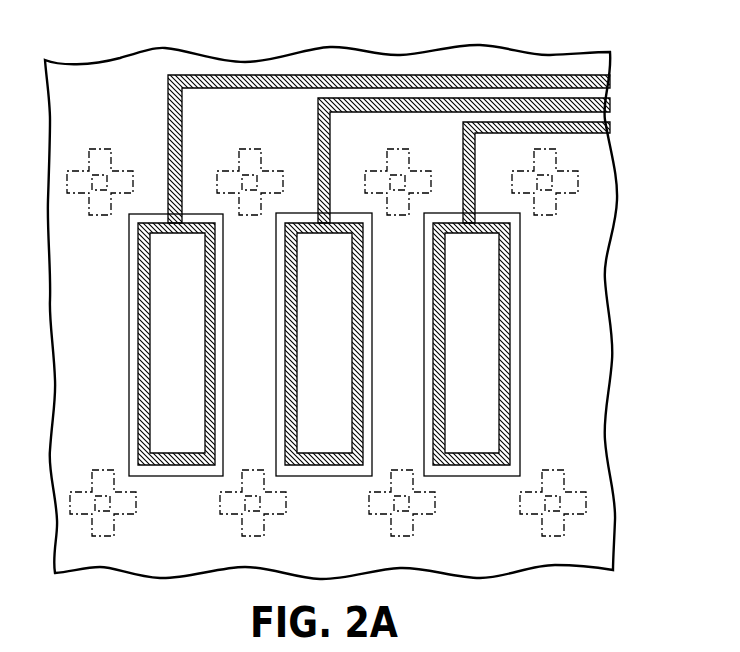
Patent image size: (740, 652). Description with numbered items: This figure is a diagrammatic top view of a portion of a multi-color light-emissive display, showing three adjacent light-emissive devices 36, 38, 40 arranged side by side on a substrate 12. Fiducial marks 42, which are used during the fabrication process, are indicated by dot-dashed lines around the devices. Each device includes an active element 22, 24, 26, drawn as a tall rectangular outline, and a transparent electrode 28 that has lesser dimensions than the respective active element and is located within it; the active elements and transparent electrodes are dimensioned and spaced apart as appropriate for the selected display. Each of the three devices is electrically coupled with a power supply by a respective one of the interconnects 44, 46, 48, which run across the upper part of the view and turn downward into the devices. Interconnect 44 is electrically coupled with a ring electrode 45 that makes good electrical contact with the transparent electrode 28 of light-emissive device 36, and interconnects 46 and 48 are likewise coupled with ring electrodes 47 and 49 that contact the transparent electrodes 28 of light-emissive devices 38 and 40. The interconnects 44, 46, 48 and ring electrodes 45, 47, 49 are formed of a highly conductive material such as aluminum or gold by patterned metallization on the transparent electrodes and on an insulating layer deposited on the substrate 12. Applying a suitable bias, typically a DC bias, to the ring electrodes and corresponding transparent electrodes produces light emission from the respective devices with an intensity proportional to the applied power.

The substrate 12 is at (590, 373).
The active element 22 is at (130, 255).
The active element 24 is at (277, 290).
The active element 26 is at (425, 288).
The transparent electrode 28 is at (194, 334).
The light-emissive device 36 is at (203, 211).
The light-emissive device 38 is at (350, 211).
The light-emissive device 40 is at (497, 211).
The fiducial mark 42 is at (410, 163).
The interconnect 44 is at (217, 75).
The interconnect 46 is at (392, 100).
The interconnect 48 is at (604, 138).
The ring electrode 45 is at (139, 383).
The ring electrode 47 is at (286, 392).
The ring electrode 49 is at (434, 392).